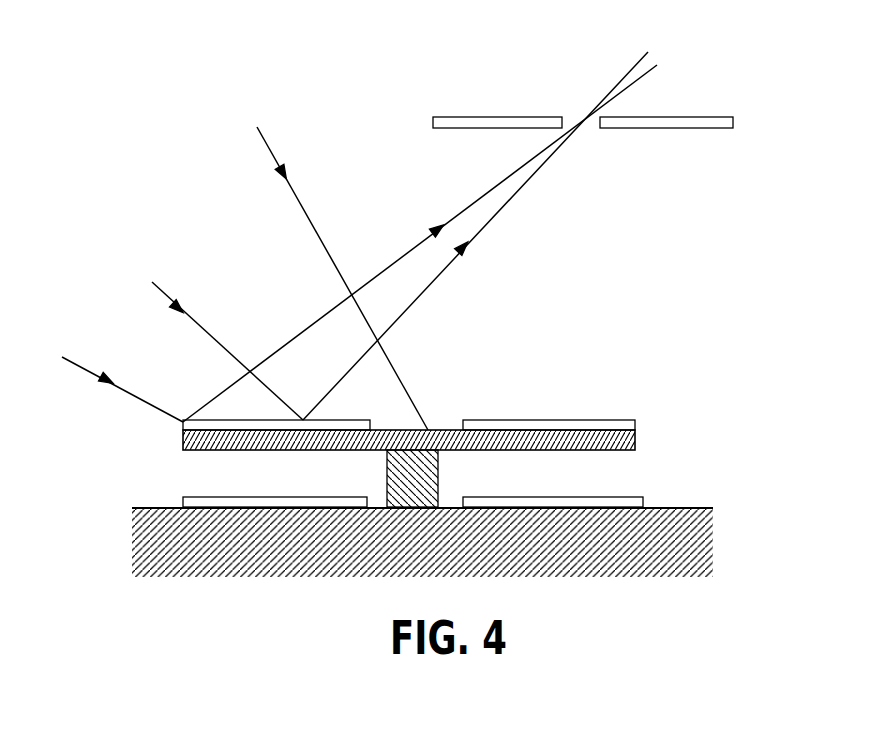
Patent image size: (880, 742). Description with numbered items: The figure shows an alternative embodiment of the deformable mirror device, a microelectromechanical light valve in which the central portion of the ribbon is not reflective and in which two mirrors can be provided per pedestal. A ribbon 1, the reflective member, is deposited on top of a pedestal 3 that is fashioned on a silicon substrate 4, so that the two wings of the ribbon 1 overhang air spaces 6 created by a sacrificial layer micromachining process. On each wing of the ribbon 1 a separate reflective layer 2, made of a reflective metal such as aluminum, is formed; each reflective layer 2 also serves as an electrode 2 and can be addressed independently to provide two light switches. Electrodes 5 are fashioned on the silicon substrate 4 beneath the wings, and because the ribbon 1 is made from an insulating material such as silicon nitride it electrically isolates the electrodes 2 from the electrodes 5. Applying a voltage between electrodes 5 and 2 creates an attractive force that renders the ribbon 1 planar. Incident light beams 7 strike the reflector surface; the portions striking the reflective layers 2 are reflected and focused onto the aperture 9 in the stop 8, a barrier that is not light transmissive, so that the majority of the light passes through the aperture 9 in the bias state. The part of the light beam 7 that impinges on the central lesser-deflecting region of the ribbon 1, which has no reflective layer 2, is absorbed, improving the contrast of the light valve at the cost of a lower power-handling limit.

The ribbon 1 is at (637, 437).
The reflective layer 2 is at (563, 420).
The pedestal 3 is at (430, 468).
The silicon substrate 4 is at (165, 555).
The electrodes 5 is at (193, 498).
The air space 6 is at (276, 487).
The incident light beam 7 is at (277, 152).
The stop 8 is at (470, 117).
The aperture 9 is at (578, 115).